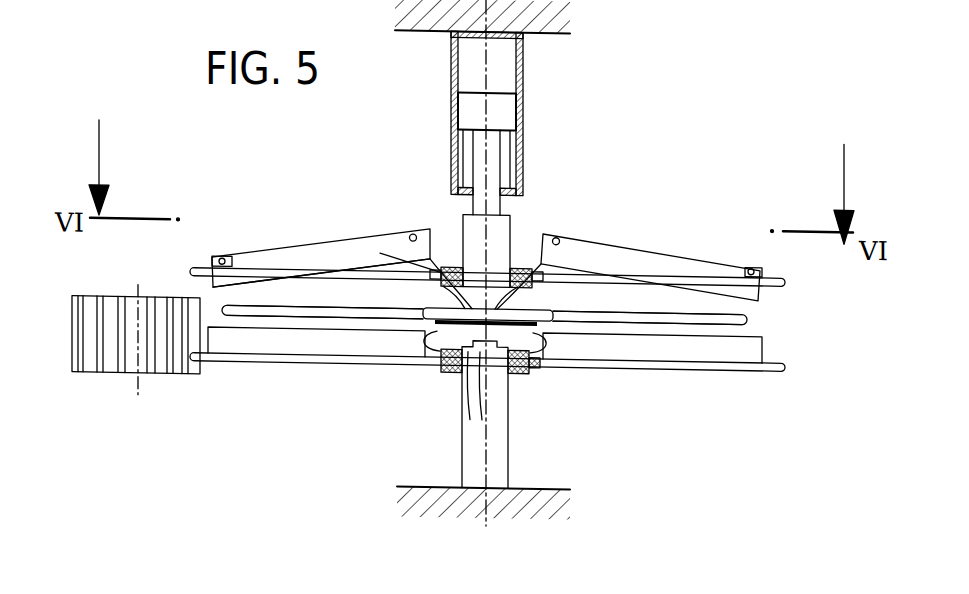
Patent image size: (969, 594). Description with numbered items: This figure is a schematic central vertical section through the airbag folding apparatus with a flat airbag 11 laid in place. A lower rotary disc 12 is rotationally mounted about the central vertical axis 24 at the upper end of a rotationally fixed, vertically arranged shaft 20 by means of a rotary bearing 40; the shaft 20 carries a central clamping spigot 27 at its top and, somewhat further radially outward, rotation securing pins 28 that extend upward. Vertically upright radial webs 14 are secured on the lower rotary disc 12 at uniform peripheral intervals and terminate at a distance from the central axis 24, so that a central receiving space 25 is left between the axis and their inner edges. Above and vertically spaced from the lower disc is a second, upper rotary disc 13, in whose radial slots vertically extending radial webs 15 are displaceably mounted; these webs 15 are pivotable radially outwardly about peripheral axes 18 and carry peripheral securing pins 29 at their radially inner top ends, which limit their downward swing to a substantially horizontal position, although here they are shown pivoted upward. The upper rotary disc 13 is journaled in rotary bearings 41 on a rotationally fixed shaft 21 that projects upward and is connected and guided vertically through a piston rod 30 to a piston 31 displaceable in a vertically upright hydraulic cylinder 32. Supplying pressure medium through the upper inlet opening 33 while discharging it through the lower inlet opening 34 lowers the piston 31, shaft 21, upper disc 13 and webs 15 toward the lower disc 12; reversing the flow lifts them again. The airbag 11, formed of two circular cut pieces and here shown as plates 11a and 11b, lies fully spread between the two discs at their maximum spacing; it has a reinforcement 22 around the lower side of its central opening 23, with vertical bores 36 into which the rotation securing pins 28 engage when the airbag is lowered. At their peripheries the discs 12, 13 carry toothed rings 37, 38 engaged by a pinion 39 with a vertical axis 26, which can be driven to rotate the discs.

The airbag 11 is at (720, 332).
The lower plate 11a is at (650, 321).
The upper plate 11b is at (636, 307).
The lower rotary disc 12 is at (242, 362).
The upper rotary disc 13 is at (325, 276).
The radial webs 14 is at (292, 347).
The radial webs 15 is at (293, 254).
The peripheral axes 18 is at (221, 261).
The shaft 20 is at (495, 445).
The shaft 21 is at (505, 236).
The reinforcement 22 is at (427, 329).
The central opening 23 is at (553, 270).
The central axis 24 is at (488, 527).
The central receiving space 25 is at (533, 342).
The vertical axis 26 is at (138, 387).
The central clamping spigot 27 is at (473, 400).
The rotation securing pins 28 is at (436, 351).
The peripheral securing pins 29 is at (413, 235).
The piston rod 30 is at (492, 155).
The piston 31 is at (474, 108).
The hydraulic cylinder 32 is at (452, 67).
The upper inlet opening 33 is at (520, 50).
The lower inlet opening 34 is at (515, 188).
The vertical bores 36 is at (430, 275).
The toothed ring 37 is at (790, 362).
The toothed ring 38 is at (786, 276).
The pinion 39 is at (87, 351).
The rotary bearing 40 is at (457, 368).
The rotary bearings 41 is at (450, 262).